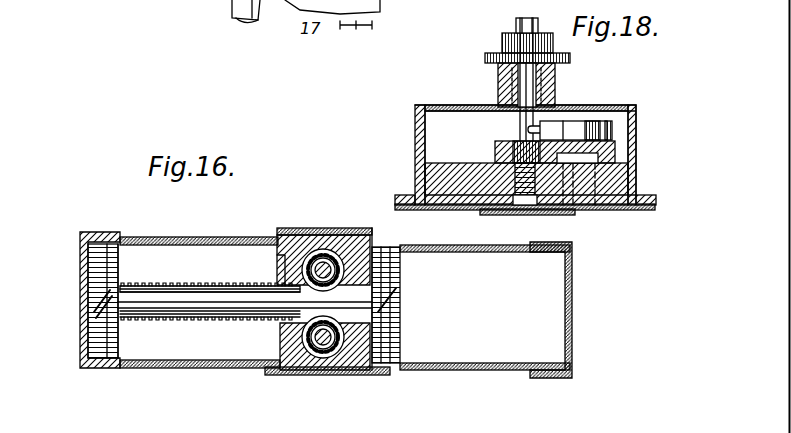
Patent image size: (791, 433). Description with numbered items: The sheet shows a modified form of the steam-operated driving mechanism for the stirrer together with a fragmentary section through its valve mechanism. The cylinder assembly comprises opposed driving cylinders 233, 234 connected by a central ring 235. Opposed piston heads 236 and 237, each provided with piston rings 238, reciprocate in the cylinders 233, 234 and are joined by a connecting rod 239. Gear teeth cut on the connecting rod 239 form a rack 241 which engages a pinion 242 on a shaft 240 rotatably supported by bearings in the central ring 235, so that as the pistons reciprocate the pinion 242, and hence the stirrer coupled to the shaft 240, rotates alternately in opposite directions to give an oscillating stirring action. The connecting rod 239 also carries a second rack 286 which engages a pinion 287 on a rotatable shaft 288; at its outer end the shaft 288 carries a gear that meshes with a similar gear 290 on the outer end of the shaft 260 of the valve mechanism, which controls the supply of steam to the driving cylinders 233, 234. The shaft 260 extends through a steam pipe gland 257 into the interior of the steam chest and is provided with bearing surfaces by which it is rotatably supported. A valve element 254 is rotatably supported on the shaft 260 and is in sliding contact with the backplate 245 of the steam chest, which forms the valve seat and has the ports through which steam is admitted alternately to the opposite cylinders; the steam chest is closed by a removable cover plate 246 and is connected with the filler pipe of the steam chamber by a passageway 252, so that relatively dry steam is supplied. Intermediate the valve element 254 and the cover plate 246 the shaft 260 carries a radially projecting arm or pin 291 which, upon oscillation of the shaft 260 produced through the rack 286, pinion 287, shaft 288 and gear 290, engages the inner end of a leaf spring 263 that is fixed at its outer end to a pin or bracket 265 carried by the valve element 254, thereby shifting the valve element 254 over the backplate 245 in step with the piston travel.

In FIG. 16, the driving cylinder 233 is at (196, 363).
In FIG. 16, the driving cylinder 234 is at (502, 372).
In FIG. 16, the central ring 235 is at (297, 243).
In FIG. 16, the piston head 236 is at (95, 318).
In FIG. 16, the piston head 237 is at (400, 300).
In FIG. 16, the piston ring 238 is at (102, 270).
In FIG. 16, the connecting rod 239 is at (225, 300).
In FIG. 16, the shaft 240 is at (292, 262).
In FIG. 16, the rack 241 is at (237, 287).
In FIG. 16, the pinion 242 is at (330, 255).
In FIG. 18, the backplate 245 is at (447, 190).
In FIG. 18, the cover plate 246 is at (415, 205).
In FIG. 18, the passageway 252 is at (230, 7).
In FIG. 18, the valve element 254 is at (615, 158).
In FIG. 18, the steam pipe gland 257 is at (498, 78).
In FIG. 18, the shaft 260 is at (520, 124).
In FIG. 18, the leaf spring 263 is at (593, 121).
In FIG. 18, the pin or bracket 265 is at (612, 128).
In FIG. 16, the second rack 286 is at (270, 319).
In FIG. 16, the pinion 287 is at (318, 350).
In FIG. 16, the rotatable shaft 288 is at (333, 352).
In FIG. 18, the gear 290 is at (485, 58).
In FIG. 18, the radially projecting arm or pin 291 is at (558, 120).